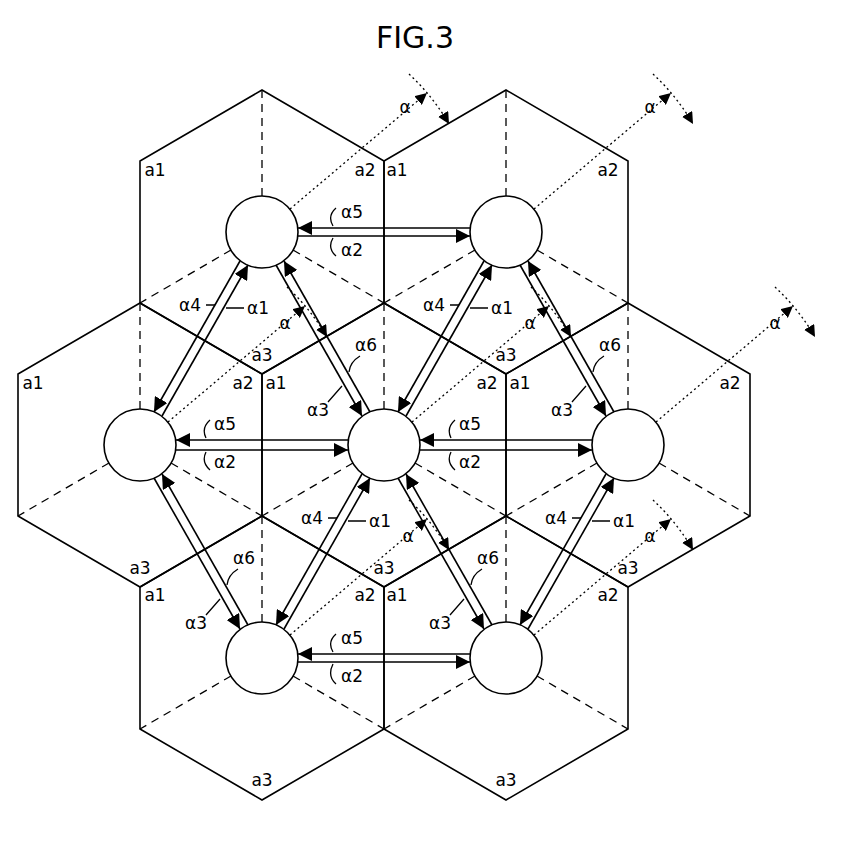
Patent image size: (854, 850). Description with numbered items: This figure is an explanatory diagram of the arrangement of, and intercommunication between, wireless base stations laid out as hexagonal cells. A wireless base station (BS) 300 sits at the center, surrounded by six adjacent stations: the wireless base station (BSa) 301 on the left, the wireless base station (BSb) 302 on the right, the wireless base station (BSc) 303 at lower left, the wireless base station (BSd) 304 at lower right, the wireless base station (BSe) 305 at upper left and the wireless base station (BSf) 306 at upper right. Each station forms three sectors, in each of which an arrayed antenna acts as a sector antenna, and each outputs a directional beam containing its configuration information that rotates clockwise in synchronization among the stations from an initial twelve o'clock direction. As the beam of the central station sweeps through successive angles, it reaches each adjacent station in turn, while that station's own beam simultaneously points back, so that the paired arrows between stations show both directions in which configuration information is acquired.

The wireless base station (BS) 300 is at (348, 457).
The wireless base station (BSa) 301 is at (110, 422).
The wireless base station (BSb) 302 is at (666, 441).
The wireless base station (BSc) 303 is at (258, 695).
The wireless base station (BSd) 304 is at (502, 695).
The wireless base station (BSe) 305 is at (231, 212).
The wireless base station (BSf) 306 is at (475, 212).